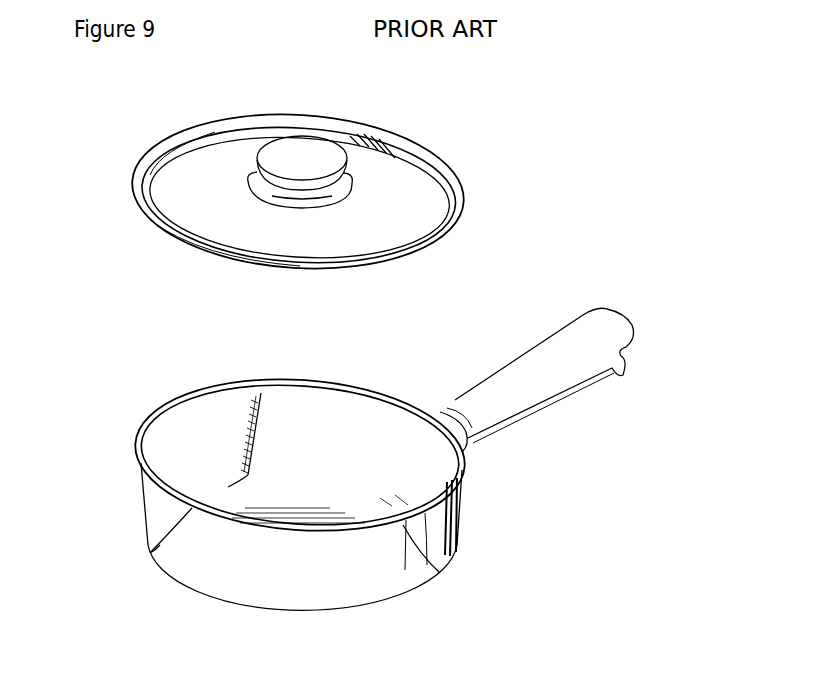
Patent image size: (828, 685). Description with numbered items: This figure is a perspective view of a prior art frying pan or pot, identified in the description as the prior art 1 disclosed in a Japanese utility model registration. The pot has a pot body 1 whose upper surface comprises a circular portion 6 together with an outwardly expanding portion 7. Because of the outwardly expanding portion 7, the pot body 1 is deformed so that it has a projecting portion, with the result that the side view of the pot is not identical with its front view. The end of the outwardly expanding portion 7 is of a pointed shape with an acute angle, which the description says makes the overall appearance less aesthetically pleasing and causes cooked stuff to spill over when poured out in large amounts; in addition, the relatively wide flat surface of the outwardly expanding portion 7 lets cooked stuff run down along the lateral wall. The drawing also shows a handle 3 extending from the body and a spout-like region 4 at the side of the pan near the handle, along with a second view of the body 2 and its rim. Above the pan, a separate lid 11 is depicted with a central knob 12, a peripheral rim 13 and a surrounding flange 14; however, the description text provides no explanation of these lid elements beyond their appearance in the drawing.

The pot body 1 is at (490, 537).
The pan body 2 is at (368, 407).
The handle 3 is at (583, 367).
The pour spout 4 is at (462, 501).
The circular portion 6 is at (456, 398).
The outwardly expanding portion 7 is at (158, 396).
The lid 11 is at (424, 125).
The knob 12 is at (312, 152).
The lid rim 13 is at (158, 233).
The lid flange 14 is at (147, 168).